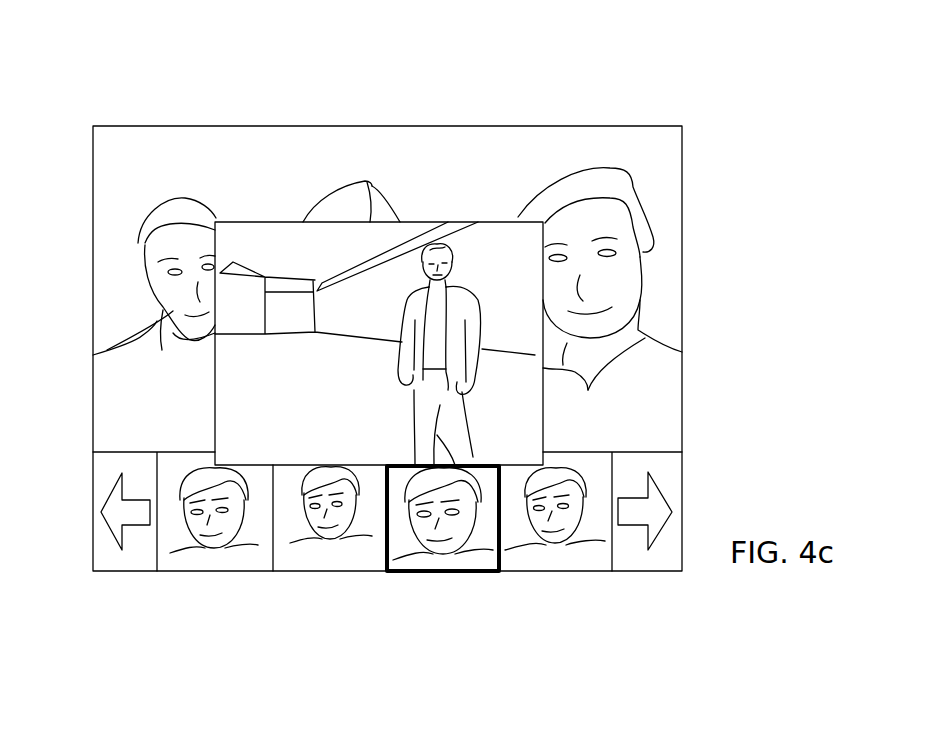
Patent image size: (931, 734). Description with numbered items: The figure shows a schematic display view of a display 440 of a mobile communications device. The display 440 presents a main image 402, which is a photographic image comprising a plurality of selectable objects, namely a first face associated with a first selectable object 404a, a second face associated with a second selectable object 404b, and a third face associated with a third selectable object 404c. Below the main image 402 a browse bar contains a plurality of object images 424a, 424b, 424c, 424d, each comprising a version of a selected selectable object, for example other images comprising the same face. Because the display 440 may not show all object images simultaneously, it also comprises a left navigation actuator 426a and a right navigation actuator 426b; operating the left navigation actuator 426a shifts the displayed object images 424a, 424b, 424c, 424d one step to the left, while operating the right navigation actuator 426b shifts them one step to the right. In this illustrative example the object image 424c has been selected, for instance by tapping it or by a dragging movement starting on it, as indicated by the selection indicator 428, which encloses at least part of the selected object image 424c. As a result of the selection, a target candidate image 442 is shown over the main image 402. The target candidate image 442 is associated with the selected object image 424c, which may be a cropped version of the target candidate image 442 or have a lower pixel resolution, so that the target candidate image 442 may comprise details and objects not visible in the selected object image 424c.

The main image 402 is at (500, 178).
The display 440 is at (700, 289).
The target candidate image 442 is at (260, 222).
The first selectable object 404a is at (173, 333).
The second selectable object 404b is at (367, 182).
The third selectable object 404c is at (562, 343).
The left navigation actuator 426a is at (133, 572).
The right navigation actuator 426b is at (633, 572).
The object image 424a is at (215, 572).
The object image 424b is at (332, 572).
The selected object image 424c is at (487, 572).
The object image 424d is at (540, 572).
The selection indicator 428 is at (400, 572).